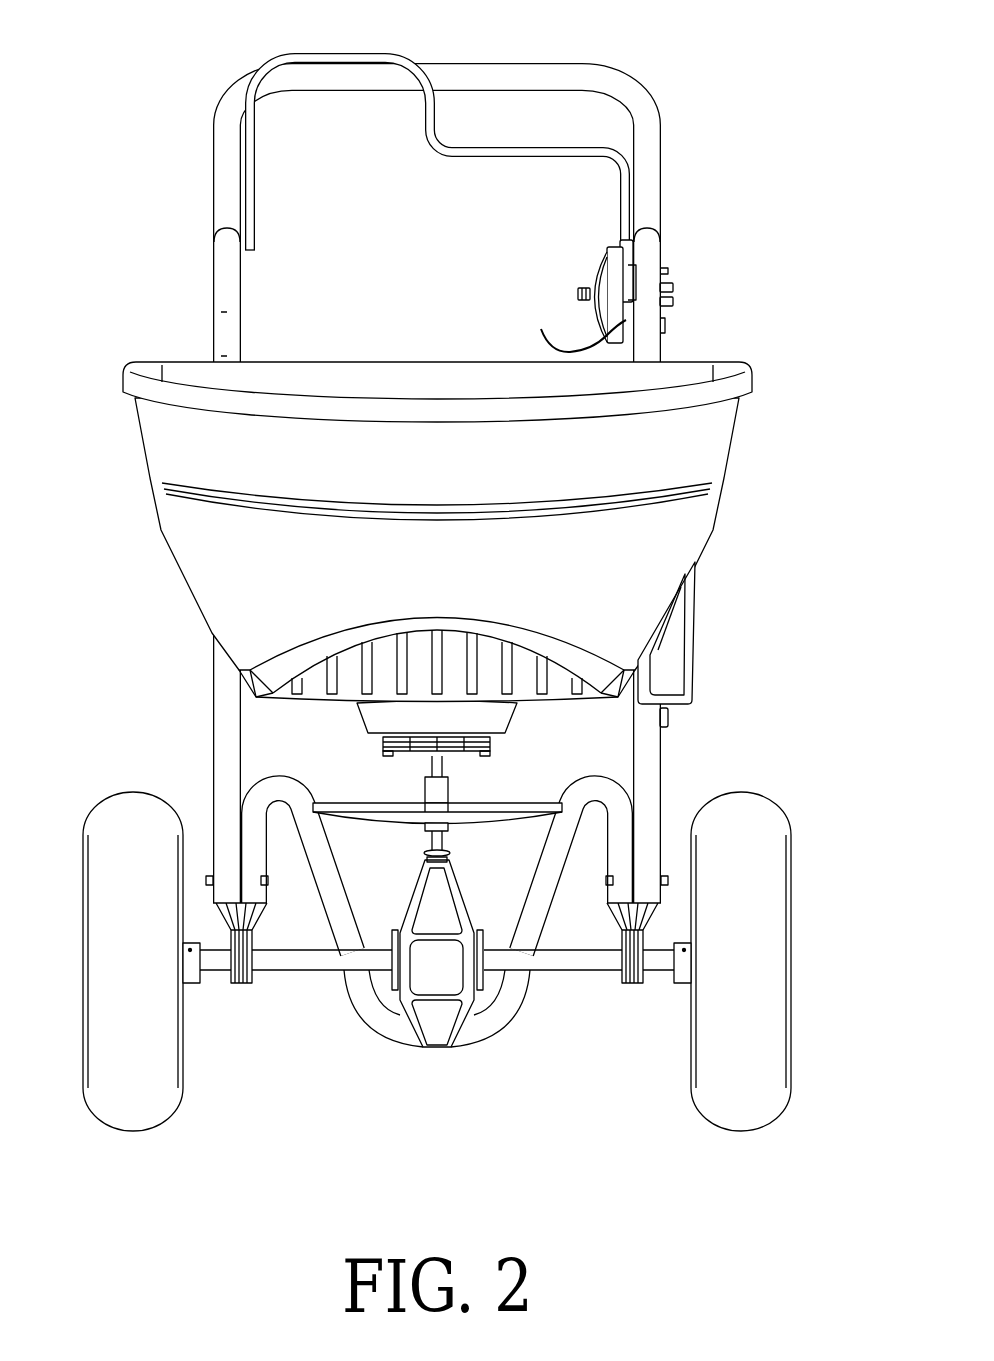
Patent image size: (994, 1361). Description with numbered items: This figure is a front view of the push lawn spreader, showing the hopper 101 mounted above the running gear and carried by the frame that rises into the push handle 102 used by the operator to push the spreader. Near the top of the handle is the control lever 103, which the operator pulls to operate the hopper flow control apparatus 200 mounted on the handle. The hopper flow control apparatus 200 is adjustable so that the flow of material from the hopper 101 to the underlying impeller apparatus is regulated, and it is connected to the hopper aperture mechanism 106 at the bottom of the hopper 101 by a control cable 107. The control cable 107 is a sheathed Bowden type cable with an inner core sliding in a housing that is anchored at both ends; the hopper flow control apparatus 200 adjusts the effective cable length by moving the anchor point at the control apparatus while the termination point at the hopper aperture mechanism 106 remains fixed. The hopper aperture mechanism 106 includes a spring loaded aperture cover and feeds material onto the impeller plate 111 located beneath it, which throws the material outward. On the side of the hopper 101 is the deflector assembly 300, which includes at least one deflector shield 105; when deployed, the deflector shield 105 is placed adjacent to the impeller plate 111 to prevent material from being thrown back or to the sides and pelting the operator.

The hopper 101 is at (756, 372).
The push handle 102 is at (643, 98).
The control lever 103 is at (426, 130).
The deflector shield 105 is at (710, 636).
The hopper aperture mechanism 106 is at (343, 729).
The control cable 107 is at (562, 323).
The impeller plate 111 is at (537, 800).
The hopper flow control apparatus 200 is at (570, 249).
The deflector assembly 300 is at (725, 644).